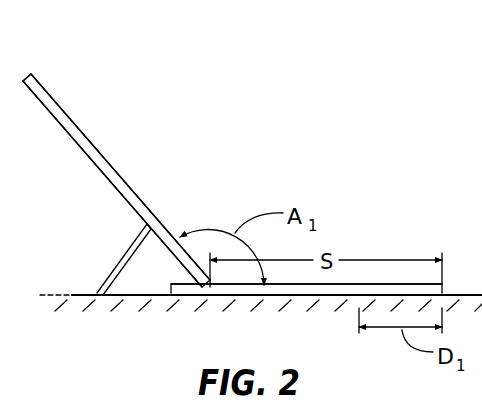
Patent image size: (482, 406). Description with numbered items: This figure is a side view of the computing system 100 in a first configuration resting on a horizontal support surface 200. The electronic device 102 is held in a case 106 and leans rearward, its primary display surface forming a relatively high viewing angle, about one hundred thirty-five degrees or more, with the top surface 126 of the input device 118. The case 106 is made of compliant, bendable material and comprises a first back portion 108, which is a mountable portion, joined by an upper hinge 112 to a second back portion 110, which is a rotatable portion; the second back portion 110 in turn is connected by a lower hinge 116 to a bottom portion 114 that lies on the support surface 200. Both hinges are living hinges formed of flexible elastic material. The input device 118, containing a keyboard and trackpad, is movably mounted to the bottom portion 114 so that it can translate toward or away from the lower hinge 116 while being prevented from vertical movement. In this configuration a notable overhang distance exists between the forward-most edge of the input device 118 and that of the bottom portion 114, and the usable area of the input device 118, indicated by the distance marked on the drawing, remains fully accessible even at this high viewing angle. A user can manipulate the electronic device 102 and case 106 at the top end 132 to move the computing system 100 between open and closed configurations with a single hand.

The computing system 100 is at (347, 101).
The electronic device 102 is at (139, 197).
The case 106 is at (42, 104).
The first back portion 108 is at (93, 162).
The second back portion 110 is at (120, 260).
The upper hinge 112 is at (147, 230).
The bottom portion 114 is at (133, 297).
The lower hinge 116 is at (92, 296).
The input device 118 is at (418, 283).
The top surface 126 is at (383, 283).
The top end 132 is at (28, 76).
The horizontal support surface 200 is at (72, 297).